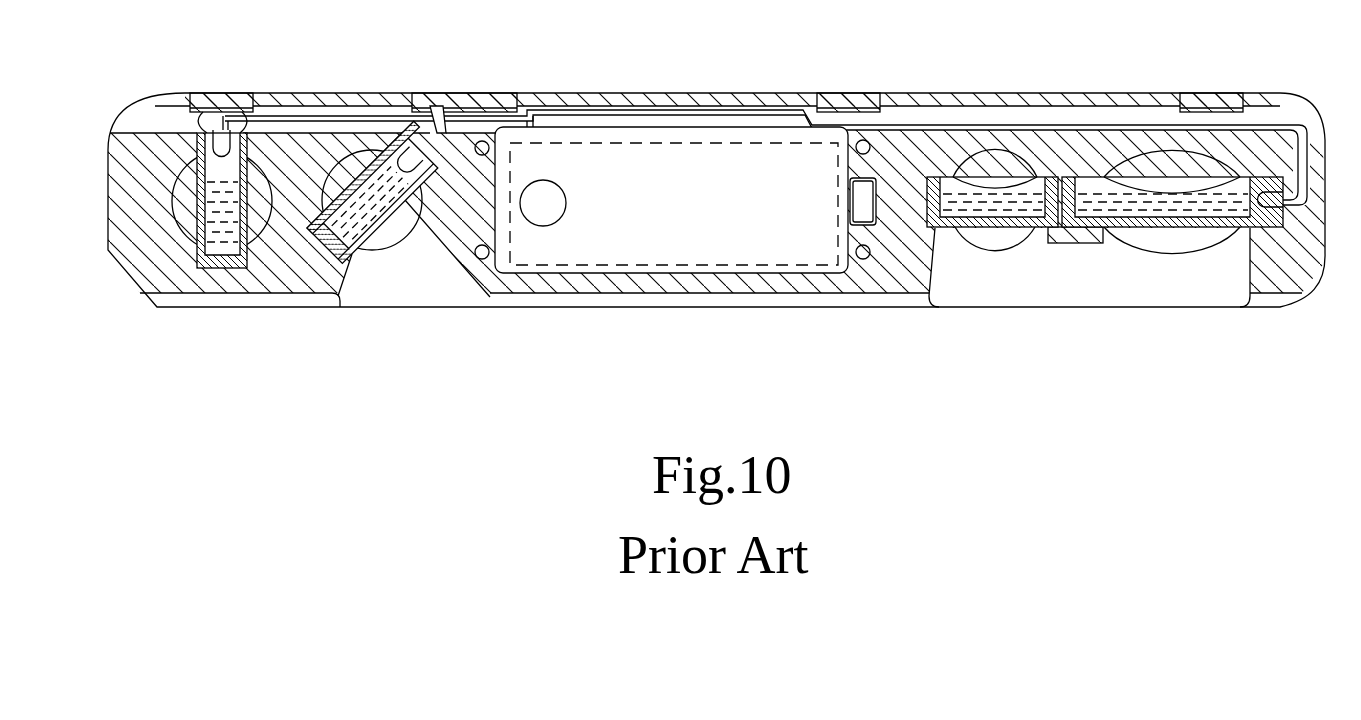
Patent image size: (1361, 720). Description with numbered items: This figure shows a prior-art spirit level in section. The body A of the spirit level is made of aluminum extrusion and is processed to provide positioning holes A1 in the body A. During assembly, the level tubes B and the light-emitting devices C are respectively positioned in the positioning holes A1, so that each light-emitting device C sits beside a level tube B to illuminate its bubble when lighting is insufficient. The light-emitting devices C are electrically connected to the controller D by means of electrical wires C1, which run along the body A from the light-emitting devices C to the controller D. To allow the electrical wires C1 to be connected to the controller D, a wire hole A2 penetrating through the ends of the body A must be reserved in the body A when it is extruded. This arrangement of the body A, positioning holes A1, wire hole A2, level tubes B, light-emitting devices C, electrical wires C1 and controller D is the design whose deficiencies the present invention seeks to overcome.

The body A is at (283, 282).
The positioning holes A1 is at (390, 140).
The wire hole A2 is at (165, 117).
The level tubes B is at (197, 228).
The light-emitting devices C is at (218, 138).
The electrical wires C1 is at (305, 116).
The controller D is at (763, 265).